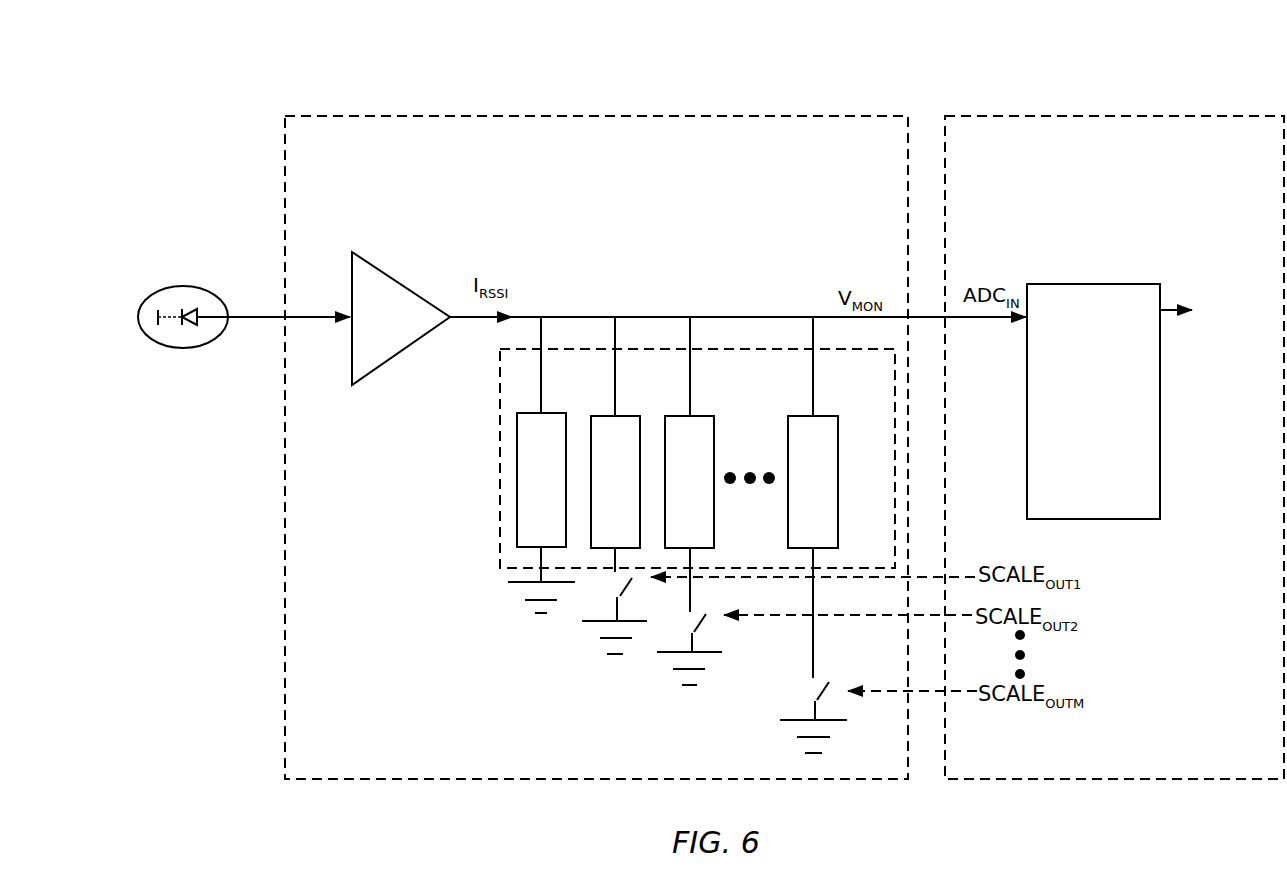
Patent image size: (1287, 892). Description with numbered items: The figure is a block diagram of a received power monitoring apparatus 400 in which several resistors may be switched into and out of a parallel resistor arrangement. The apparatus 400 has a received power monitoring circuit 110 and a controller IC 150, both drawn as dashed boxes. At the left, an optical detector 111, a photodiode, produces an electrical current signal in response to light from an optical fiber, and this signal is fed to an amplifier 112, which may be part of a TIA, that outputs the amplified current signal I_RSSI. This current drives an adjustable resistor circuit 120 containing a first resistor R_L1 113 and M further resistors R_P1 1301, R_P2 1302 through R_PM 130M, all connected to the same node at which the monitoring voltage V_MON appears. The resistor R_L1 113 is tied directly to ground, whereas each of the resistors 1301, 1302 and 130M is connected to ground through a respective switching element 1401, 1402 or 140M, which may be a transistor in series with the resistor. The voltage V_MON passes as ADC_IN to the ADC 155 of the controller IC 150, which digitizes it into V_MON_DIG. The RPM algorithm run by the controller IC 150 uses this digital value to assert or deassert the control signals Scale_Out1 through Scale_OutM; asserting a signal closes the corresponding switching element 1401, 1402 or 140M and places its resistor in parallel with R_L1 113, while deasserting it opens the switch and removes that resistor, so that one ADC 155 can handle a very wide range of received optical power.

The received power monitoring apparatus 400 is at (866, 62).
The received power monitoring circuit 110 is at (857, 177).
The controller IC 150 is at (1234, 154).
The ADC 155 is at (1075, 440).
The optical detector 111 is at (200, 286).
The amplifier 112 is at (407, 285).
The adjustable resistor circuit 120 is at (498, 410).
The first resistor R_L1 113 is at (550, 410).
The resistor R_P1 1301 is at (622, 413).
The resistor R_P2 1302 is at (697, 413).
The resistor R_PM 130M is at (816, 413).
The switching element 140_1 1401 is at (604, 594).
The switching element 140_2 1402 is at (685, 620).
The switching element 140_M 140M is at (801, 679).